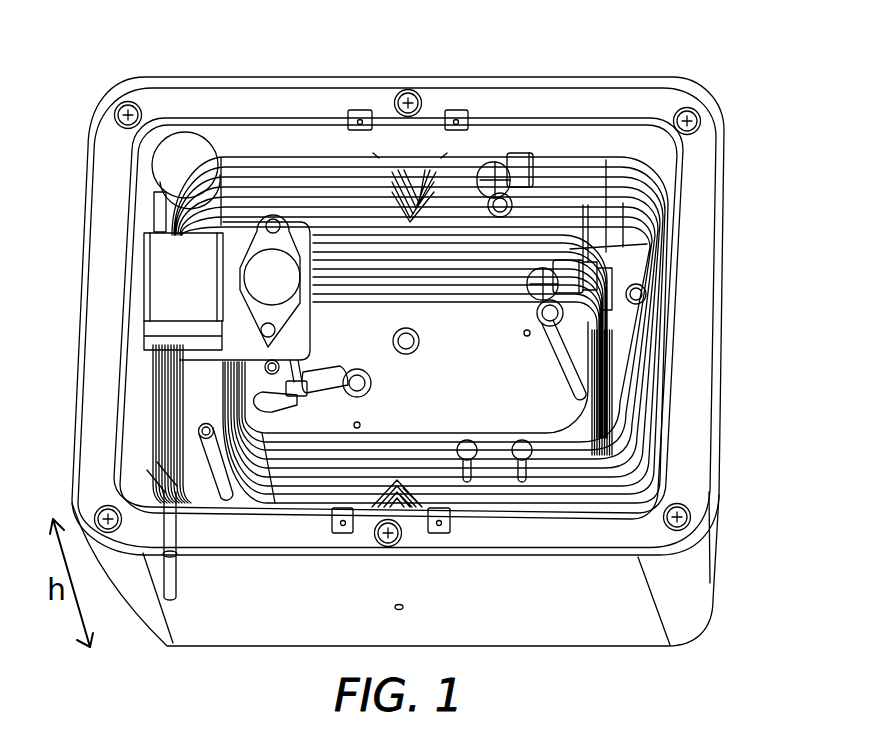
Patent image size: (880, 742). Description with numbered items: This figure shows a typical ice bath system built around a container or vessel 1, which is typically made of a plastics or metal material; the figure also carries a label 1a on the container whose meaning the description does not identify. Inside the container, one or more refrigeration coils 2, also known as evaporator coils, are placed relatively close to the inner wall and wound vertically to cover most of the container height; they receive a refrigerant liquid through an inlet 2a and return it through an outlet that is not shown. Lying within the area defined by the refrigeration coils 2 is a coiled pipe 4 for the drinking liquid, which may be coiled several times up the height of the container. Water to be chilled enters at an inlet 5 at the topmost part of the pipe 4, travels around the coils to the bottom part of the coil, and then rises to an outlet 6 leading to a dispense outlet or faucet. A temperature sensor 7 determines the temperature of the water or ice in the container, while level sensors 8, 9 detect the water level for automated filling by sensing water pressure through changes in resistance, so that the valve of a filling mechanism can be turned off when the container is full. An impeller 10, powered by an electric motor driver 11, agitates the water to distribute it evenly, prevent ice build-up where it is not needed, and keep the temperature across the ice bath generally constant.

The container 1 is at (737, 383).
The lid frame 1a is at (680, 175).
The refrigeration coils 2 is at (665, 275).
The inlet 2a is at (173, 607).
The pipe 4 is at (547, 443).
The inlet 5 is at (530, 132).
The outlet 6 is at (580, 300).
The temperature sensor 7 is at (187, 437).
The level sensor 8 is at (482, 462).
The level sensor 9 is at (517, 460).
The impeller 10 is at (290, 388).
The electric motor driver 11 is at (237, 282).